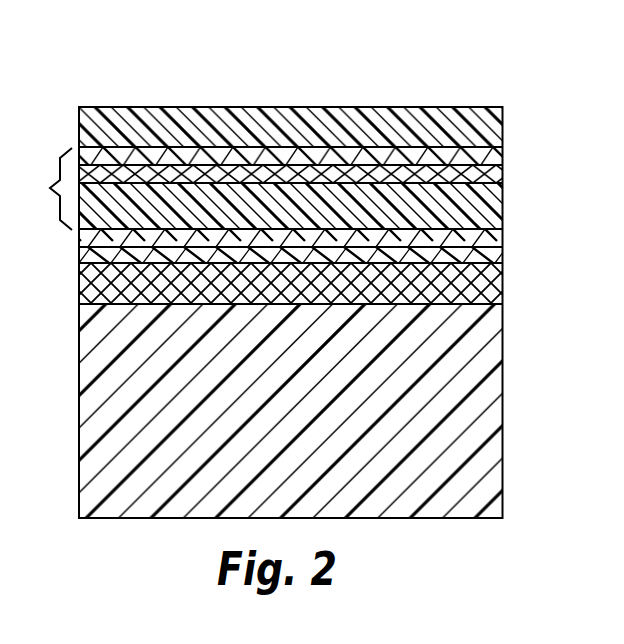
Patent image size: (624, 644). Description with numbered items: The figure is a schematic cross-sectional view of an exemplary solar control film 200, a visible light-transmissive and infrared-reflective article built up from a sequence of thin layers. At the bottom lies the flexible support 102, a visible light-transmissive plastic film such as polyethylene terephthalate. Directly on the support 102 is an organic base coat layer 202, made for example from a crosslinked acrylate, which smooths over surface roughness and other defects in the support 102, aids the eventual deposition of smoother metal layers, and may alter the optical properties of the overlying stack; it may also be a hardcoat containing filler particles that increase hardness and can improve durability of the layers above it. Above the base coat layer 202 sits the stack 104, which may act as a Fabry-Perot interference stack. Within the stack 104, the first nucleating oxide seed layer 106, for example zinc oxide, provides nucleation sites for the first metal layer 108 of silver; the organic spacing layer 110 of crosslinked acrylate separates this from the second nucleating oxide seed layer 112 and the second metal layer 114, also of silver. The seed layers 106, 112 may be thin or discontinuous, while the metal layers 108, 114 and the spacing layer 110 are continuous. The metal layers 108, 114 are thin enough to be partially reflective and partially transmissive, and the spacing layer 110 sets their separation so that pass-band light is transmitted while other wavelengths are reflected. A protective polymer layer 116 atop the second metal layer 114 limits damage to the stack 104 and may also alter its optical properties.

The solar control film 200 is at (147, 67).
The flexible support 102 is at (495, 408).
The stack 104 is at (37, 189).
The first nucleating oxide seed layer 106 is at (490, 253).
The first metal layer 108 is at (493, 235).
The organic spacing layer 110 is at (488, 213).
The second nucleating oxide seed layer 112 is at (497, 176).
The second metal layer 114 is at (498, 158).
The protective polymer layer 116 is at (483, 127).
The organic base coat layer 202 is at (493, 292).